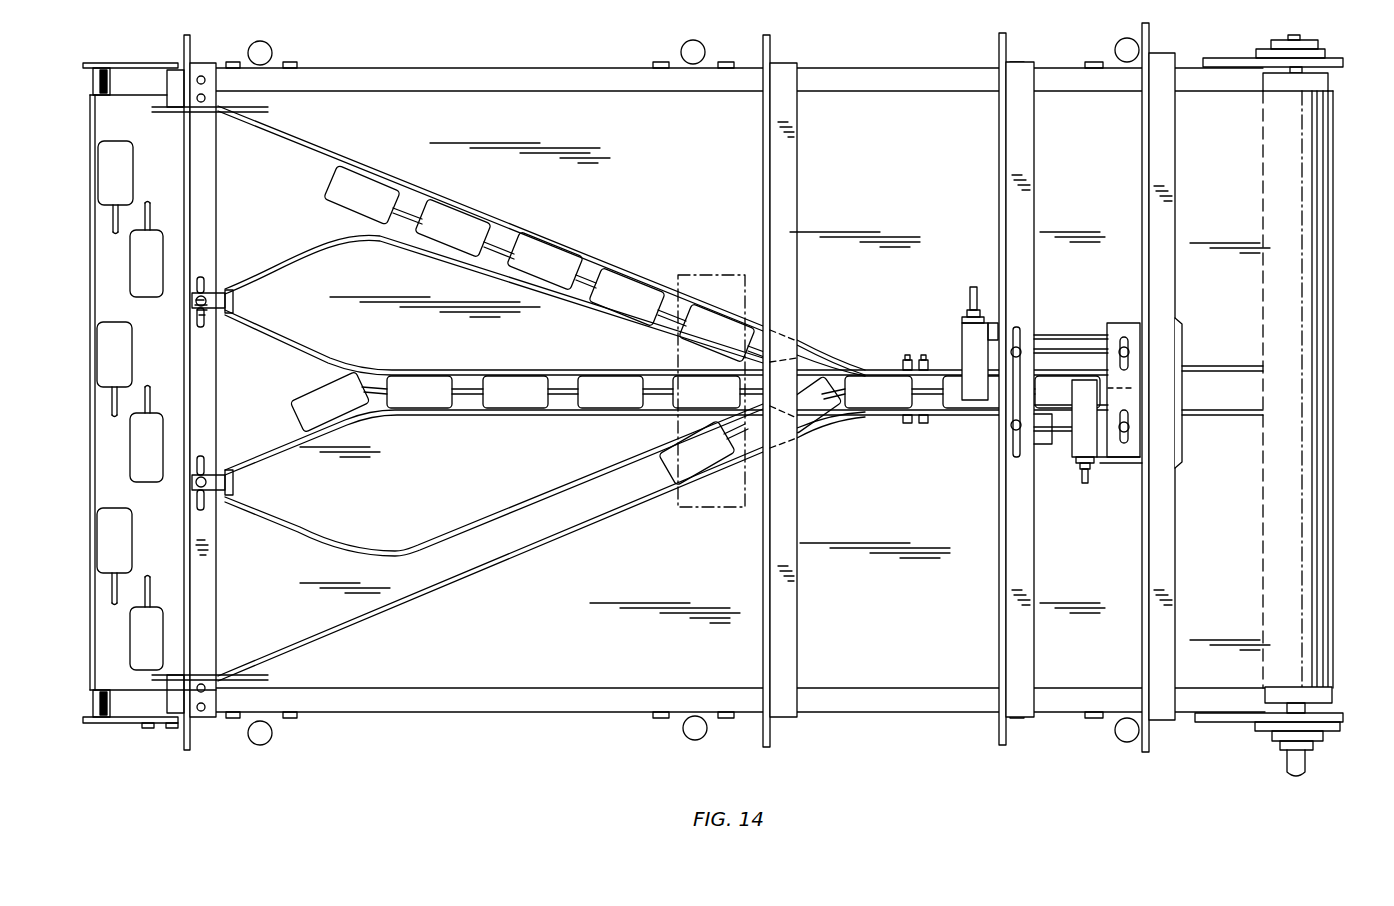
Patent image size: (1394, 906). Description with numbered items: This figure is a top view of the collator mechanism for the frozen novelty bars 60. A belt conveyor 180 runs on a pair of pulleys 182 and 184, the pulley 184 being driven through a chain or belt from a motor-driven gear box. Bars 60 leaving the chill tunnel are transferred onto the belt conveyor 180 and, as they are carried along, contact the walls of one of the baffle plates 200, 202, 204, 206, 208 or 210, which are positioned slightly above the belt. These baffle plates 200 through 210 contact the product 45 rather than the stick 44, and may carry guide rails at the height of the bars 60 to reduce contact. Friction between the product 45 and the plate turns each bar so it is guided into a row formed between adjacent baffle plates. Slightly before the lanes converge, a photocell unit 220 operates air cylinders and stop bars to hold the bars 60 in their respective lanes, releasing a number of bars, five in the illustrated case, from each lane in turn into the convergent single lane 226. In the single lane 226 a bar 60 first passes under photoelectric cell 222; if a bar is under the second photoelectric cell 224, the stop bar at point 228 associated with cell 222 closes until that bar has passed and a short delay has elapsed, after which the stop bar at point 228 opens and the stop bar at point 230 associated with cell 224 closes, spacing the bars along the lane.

The stick 44 is at (150, 206).
The product 45 is at (131, 262).
The bars 60 is at (134, 530).
The belt conveyor 180 is at (625, 149).
The pulley 182 is at (113, 720).
The pulley 184 is at (1333, 690).
The baffle plate 200 is at (405, 597).
The baffle plate 202 is at (418, 547).
The baffle plate 204 is at (383, 413).
The baffle plate 206 is at (366, 366).
The baffle plate 208 is at (330, 254).
The baffle plate 210 is at (332, 154).
The photocell unit 220 is at (722, 275).
The photoelectric cell 222 is at (965, 350).
The photoelectric cell 224 is at (1075, 450).
The single lane 226 is at (955, 418).
The stop bar point 228 is at (1011, 424).
The stop bar point 230 is at (1123, 460).